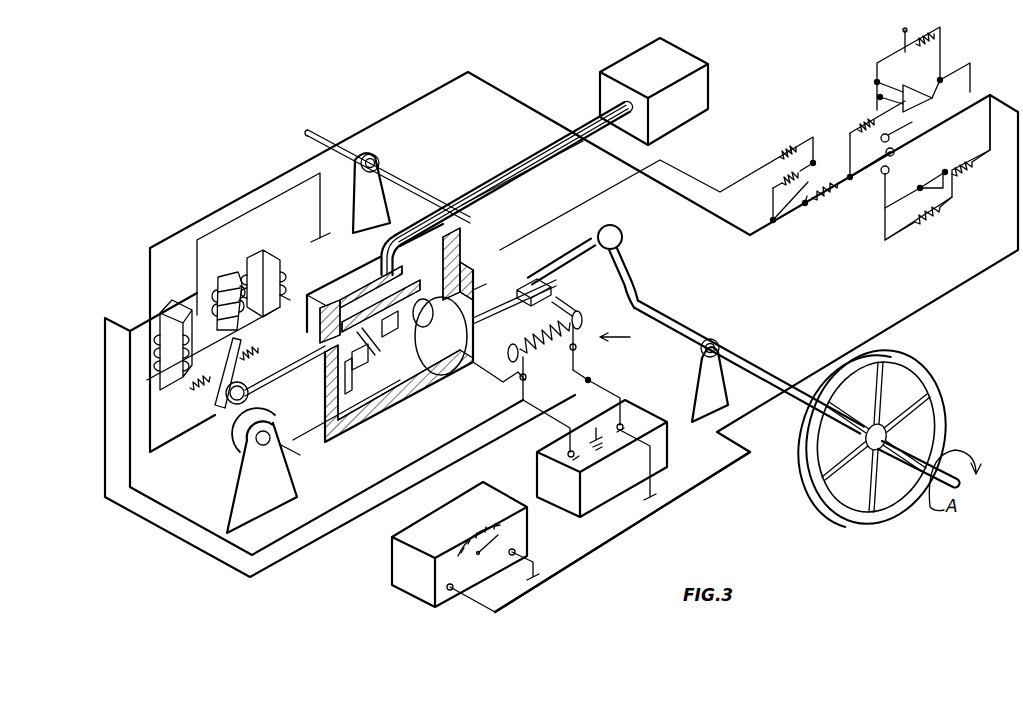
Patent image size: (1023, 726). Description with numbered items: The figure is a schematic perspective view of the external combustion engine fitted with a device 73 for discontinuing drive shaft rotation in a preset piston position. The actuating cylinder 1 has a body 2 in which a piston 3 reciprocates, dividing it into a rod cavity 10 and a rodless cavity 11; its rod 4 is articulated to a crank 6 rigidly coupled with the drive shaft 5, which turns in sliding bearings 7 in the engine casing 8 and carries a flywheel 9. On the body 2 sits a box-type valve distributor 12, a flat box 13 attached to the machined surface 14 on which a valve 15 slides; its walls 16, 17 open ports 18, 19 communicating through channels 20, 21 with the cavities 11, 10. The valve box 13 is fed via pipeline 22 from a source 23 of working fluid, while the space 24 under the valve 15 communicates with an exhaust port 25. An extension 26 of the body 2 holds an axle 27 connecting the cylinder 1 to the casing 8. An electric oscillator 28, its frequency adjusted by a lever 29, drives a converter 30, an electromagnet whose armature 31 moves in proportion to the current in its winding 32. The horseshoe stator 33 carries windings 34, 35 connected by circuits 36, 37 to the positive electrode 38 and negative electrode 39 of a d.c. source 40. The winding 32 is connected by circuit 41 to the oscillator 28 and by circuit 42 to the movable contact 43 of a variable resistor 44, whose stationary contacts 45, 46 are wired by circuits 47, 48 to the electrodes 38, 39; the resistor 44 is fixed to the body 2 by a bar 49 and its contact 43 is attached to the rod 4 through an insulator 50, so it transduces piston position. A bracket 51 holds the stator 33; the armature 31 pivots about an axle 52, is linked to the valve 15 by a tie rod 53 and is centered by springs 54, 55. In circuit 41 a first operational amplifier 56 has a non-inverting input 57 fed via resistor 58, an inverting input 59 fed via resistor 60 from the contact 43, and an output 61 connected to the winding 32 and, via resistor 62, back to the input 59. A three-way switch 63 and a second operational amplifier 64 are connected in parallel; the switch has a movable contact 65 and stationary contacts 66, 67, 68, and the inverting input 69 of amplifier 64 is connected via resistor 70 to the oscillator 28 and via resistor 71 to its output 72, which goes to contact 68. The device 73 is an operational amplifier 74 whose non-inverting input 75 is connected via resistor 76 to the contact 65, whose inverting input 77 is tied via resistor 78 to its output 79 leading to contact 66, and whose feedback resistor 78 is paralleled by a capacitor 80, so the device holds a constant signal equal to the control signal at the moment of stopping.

The actuating cylinder 1 is at (333, 462).
The body 2 is at (408, 385).
The piston 3 is at (474, 334).
The rod 4 is at (506, 306).
The drive shaft 5 is at (648, 322).
The crank 6 is at (622, 240).
The sliding bearings 7 is at (377, 160).
The engine casing 8 is at (358, 193).
The flywheel 9 is at (878, 364).
The rod cavity 10 is at (491, 284).
The rodless cavity 11 is at (395, 392).
The box-type valve distributor 12 is at (331, 278).
The flat box 13 is at (374, 283).
The machined surface 14 is at (486, 262).
The valve 15 is at (345, 312).
The wall 16 is at (350, 372).
The wall 17 is at (423, 327).
The port 18 is at (374, 352).
The port 19 is at (462, 256).
The channel 20 is at (366, 368).
The channel 21 is at (442, 338).
The pipeline 22 is at (580, 125).
The source of working fluid 23 is at (672, 116).
The space 24 is at (405, 262).
The exhaust port 25 is at (398, 338).
The extension 26 is at (307, 440).
The axle 27 is at (265, 447).
The electric oscillator 28 is at (430, 510).
The lever 29 is at (494, 525).
The converter 30 is at (139, 306).
The armature 31 is at (234, 278).
The winding 32 is at (200, 297).
The horseshoe stator 33 is at (265, 255).
The winding 34 is at (120, 323).
The winding 35 is at (288, 298).
The electric circuit 36 is at (176, 488).
The electric circuit 37 is at (178, 528).
The positive electrode 38 is at (565, 450).
The negative electrode 39 is at (624, 420).
The d.c. source 40 is at (590, 420).
The electric circuit 41 is at (603, 538).
The electric circuit 42 is at (272, 186).
The movable contact 43 is at (566, 306).
The variable resistor 44 is at (627, 338).
The stationary contact 45 is at (527, 377).
The stationary contact 46 is at (577, 348).
The circuit 47 is at (528, 400).
The circuit 48 is at (600, 384).
The bar 49 is at (482, 372).
The insulator 50 is at (533, 278).
The bracket 51 is at (290, 380).
The axle 52 is at (228, 360).
The tie rod 53 is at (322, 338).
The spring 54 is at (200, 396).
The spring 55 is at (234, 406).
The first operational amplifier 56 is at (792, 226).
The non-inverting input 57 is at (808, 207).
The resistor 58 is at (830, 197).
The inverting input 59 is at (825, 155).
The resistor 60 is at (784, 147).
The output 61 is at (771, 218).
The resistor 62 is at (780, 182).
The three-way switch 63 is at (874, 213).
The second operational amplifier 64 is at (942, 168).
The movable contact 65 is at (853, 180).
The stationary contact 66 is at (896, 125).
The stationary contact 67 is at (895, 153).
The stationary contact 68 is at (890, 174).
The inverting input 69 is at (957, 168).
The resistor 70 is at (978, 160).
The resistor 71 is at (936, 212).
The output 72 is at (910, 197).
The device 73 is at (830, 64).
The operational amplifier 74 is at (920, 90).
The non-inverting input 75 is at (878, 97).
The resistor 76 is at (866, 132).
The inverting input 77 is at (875, 81).
The resistor 78 is at (900, 60).
The output 79 is at (942, 81).
The electric capacitor 80 is at (915, 31).